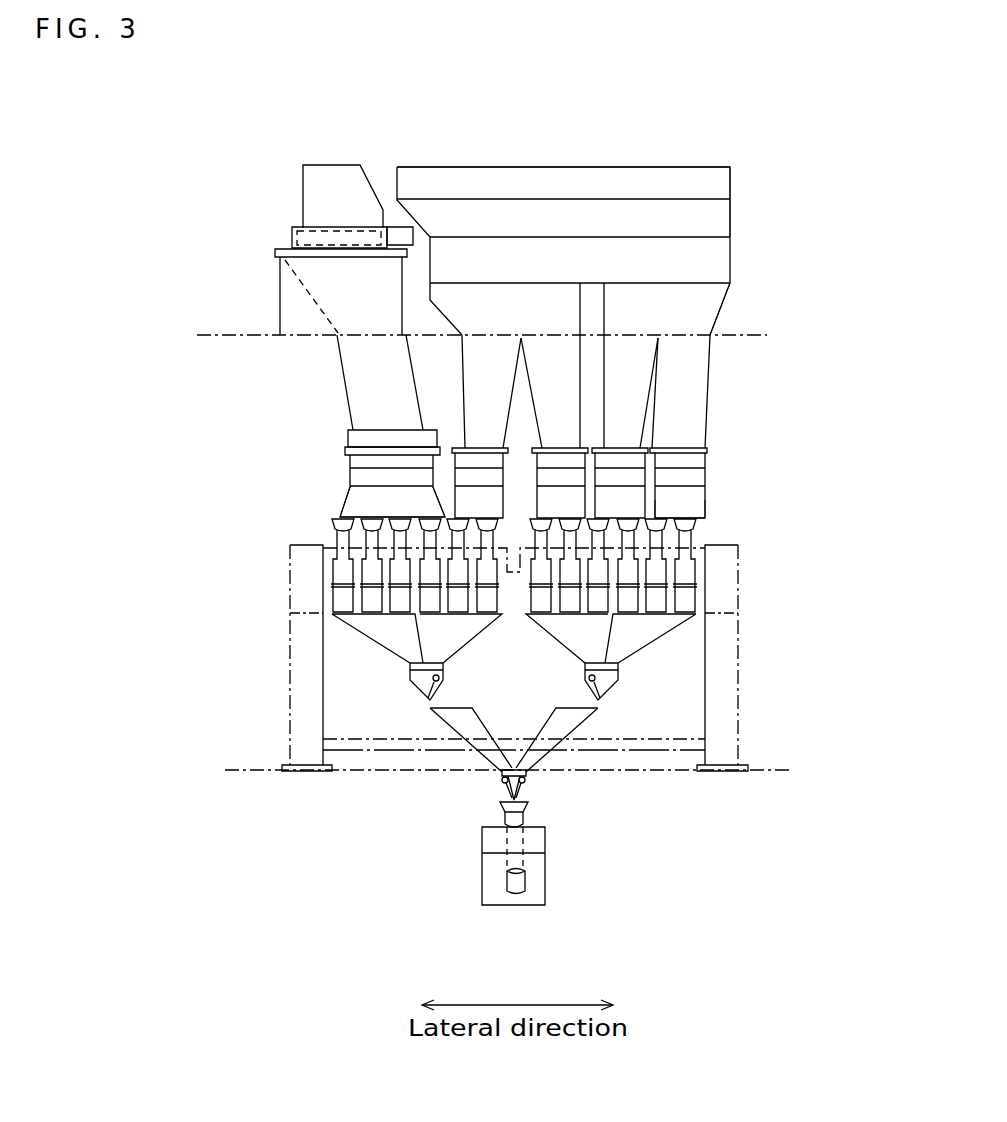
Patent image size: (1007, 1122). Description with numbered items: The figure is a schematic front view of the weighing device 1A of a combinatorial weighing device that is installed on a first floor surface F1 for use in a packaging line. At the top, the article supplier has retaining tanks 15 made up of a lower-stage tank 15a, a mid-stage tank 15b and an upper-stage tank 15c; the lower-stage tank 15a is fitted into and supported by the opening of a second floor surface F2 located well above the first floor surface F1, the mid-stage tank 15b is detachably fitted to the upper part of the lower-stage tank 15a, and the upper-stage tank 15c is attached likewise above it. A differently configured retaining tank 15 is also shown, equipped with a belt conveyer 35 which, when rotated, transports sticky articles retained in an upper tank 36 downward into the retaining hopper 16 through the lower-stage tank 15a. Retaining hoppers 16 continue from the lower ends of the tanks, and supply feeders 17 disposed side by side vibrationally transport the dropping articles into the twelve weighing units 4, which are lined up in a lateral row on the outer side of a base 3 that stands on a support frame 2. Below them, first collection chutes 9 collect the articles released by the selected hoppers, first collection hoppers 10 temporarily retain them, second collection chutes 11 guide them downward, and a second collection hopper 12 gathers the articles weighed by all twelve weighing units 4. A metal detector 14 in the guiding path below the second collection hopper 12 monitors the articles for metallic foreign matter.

The weighing device 1A is at (222, 475).
The support frame 2 is at (745, 722).
The base 3 is at (330, 545).
The weighing unit 4 is at (330, 575).
The first collection chute 9 is at (371, 640).
The first collection hopper 10 is at (420, 690).
The second collection chute 11 is at (482, 716).
The second collection hopper 12 is at (526, 776).
The metal detector 14 is at (548, 870).
The retaining tank 15 is at (737, 270).
The lower-stage tank 15a is at (341, 398).
The mid-stage tank 15b is at (718, 311).
The upper-stage tank 15c is at (731, 222).
The retaining hopper 16 is at (341, 508).
The supply feeder 17 is at (362, 516).
The belt conveyer 35 is at (334, 227).
The upper tank 36 is at (325, 165).
The first floor surface F1 is at (245, 768).
The second floor surface F2 is at (215, 333).